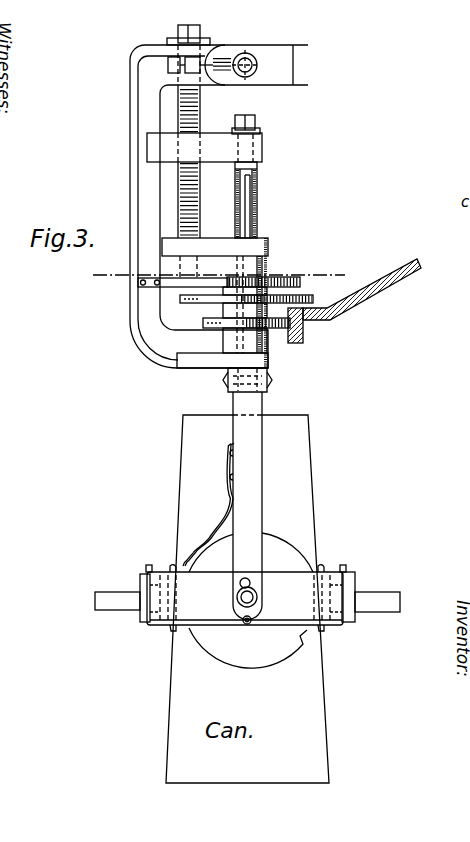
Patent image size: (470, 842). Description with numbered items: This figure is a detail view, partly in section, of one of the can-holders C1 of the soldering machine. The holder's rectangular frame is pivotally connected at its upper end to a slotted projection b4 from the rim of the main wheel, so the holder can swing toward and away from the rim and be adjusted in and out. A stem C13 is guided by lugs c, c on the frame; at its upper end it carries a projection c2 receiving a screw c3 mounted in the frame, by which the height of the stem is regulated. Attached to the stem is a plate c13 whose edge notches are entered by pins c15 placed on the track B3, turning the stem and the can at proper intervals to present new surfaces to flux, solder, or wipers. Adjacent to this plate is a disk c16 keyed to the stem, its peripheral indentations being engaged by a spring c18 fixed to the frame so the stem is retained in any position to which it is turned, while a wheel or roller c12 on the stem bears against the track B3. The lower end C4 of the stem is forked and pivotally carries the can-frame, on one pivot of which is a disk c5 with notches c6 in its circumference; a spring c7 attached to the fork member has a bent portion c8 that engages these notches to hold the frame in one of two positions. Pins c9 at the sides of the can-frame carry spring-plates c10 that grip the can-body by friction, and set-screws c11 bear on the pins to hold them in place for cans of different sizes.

The clamp frame C1 is at (248, 206).
The projection b4 is at (298, 70).
The screw c3 is at (185, 128).
The projection c2 is at (247, 150).
The adjusting rod C13 is at (257, 202).
The lugs c is at (263, 258).
The spring c18 is at (178, 282).
The disk c16 is at (307, 275).
The plate c13 is at (187, 302).
The wheel or roller c12 is at (207, 322).
The pins c15 is at (308, 292).
The track B3 is at (342, 313).
The lower end of the stem C4 is at (248, 485).
The spring c7 is at (222, 518).
The bent portion c8 is at (200, 557).
The disk c5 is at (247, 588).
The pins c9 is at (118, 602).
The spring-plates c10 is at (172, 568).
The set-screws c11 is at (150, 570).
The notches c6 is at (290, 642).